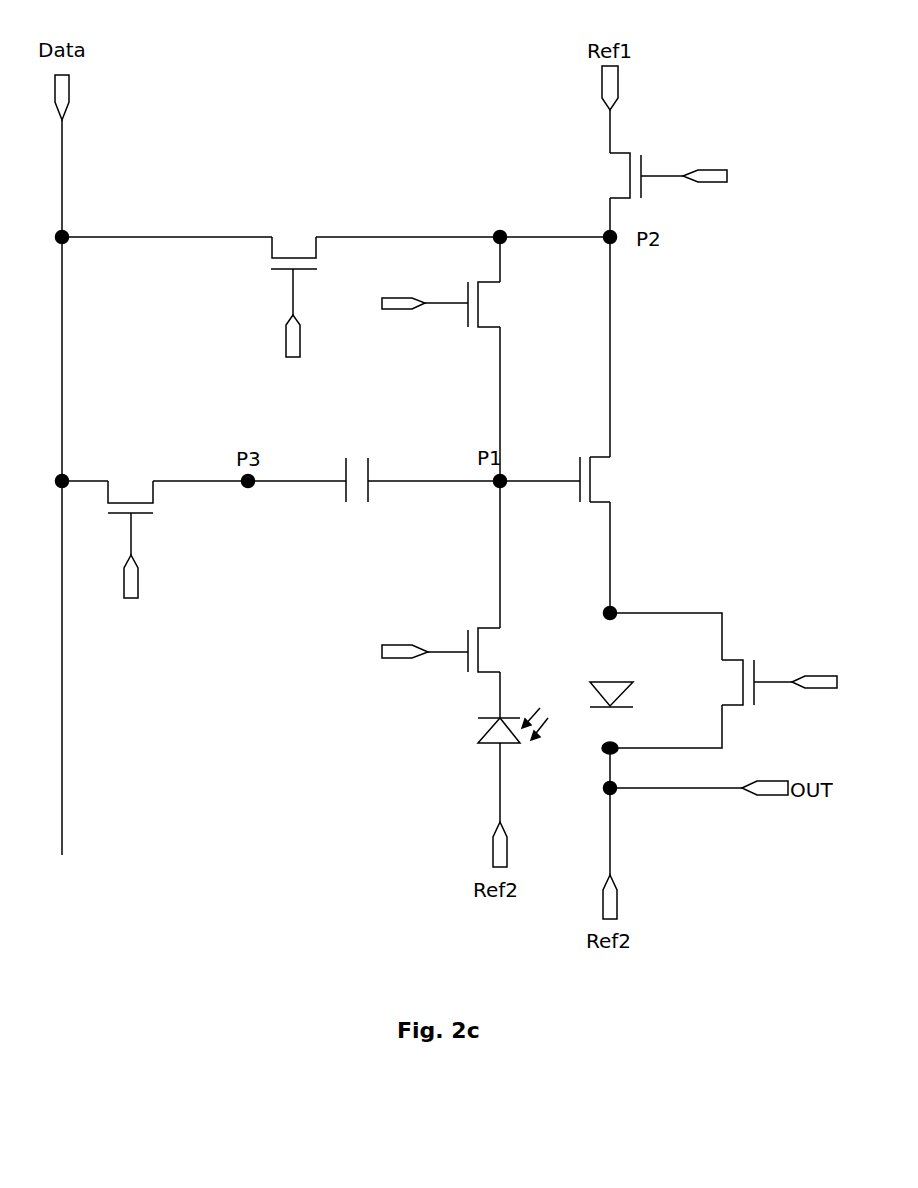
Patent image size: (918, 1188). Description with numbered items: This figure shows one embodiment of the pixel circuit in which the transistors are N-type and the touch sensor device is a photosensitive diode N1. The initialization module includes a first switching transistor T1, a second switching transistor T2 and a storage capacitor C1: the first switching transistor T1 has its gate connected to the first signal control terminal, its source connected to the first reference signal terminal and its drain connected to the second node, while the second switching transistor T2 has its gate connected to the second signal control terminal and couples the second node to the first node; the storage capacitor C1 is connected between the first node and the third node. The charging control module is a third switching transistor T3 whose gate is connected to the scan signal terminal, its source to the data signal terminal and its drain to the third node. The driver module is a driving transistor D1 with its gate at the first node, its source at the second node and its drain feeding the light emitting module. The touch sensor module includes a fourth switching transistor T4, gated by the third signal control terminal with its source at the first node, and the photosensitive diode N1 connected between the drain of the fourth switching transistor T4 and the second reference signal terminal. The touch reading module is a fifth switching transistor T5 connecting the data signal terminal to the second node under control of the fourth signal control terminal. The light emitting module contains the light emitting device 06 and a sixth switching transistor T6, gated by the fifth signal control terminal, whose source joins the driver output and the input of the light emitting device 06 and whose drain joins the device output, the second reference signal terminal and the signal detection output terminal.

The light emitting device 06 is at (628, 682).
The first switching transistor T1 is at (677, 175).
The second switching transistor T2 is at (427, 304).
The third switching transistor T3 is at (133, 539).
The fourth switching transistor T4 is at (421, 650).
The fifth switching transistor T5 is at (294, 299).
The sixth switching transistor T6 is at (787, 682).
The storage capacitor C1 is at (361, 496).
The driving transistor D1 is at (610, 479).
The photosensitive diode N1 is at (489, 725).